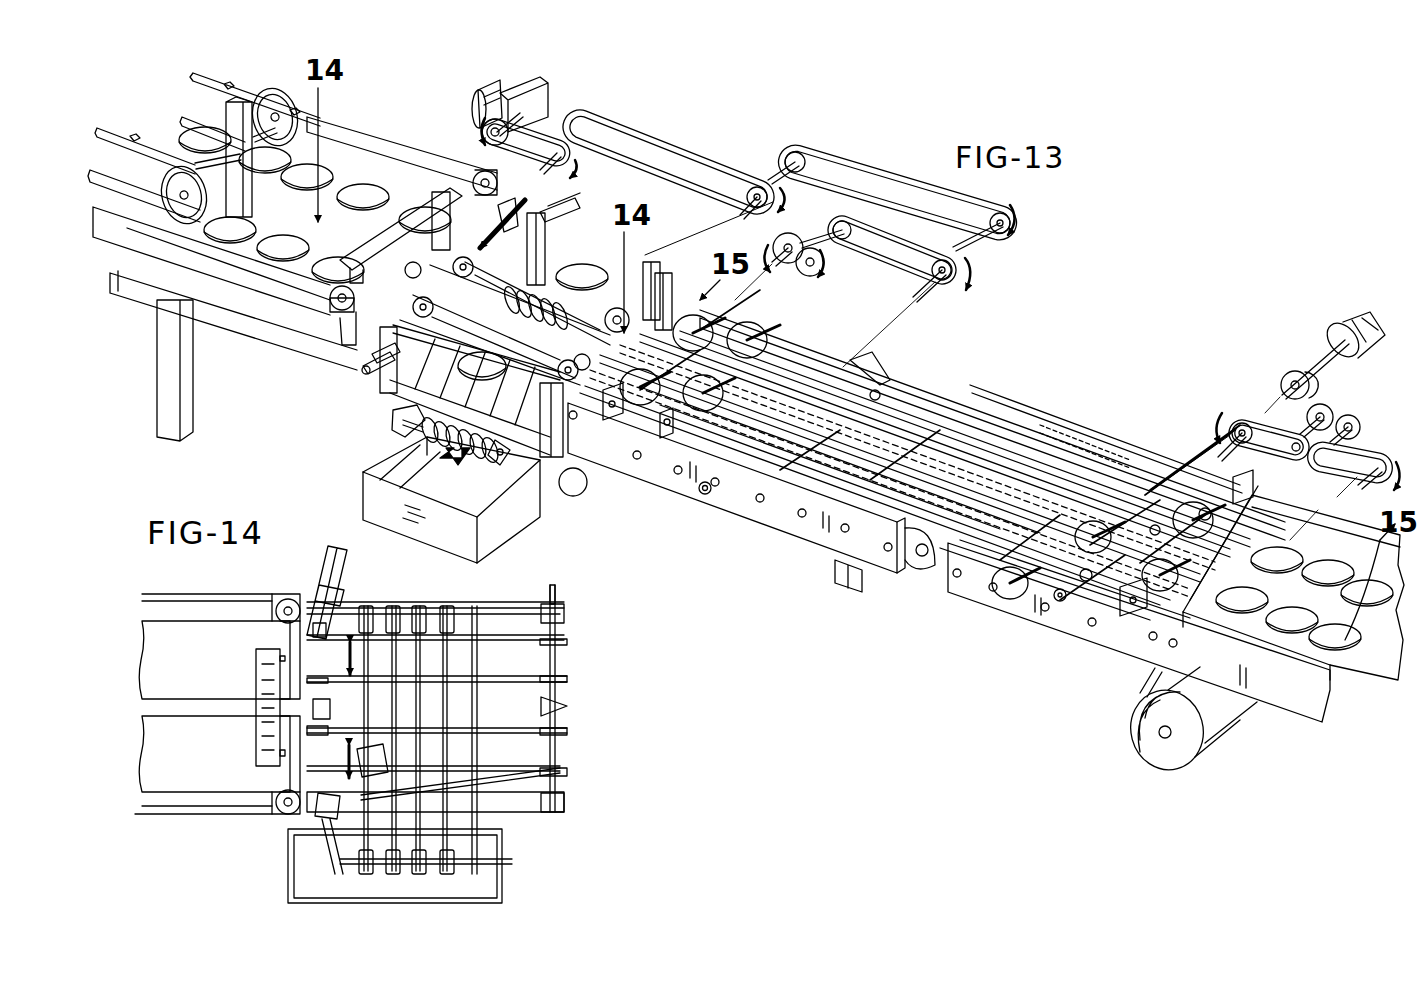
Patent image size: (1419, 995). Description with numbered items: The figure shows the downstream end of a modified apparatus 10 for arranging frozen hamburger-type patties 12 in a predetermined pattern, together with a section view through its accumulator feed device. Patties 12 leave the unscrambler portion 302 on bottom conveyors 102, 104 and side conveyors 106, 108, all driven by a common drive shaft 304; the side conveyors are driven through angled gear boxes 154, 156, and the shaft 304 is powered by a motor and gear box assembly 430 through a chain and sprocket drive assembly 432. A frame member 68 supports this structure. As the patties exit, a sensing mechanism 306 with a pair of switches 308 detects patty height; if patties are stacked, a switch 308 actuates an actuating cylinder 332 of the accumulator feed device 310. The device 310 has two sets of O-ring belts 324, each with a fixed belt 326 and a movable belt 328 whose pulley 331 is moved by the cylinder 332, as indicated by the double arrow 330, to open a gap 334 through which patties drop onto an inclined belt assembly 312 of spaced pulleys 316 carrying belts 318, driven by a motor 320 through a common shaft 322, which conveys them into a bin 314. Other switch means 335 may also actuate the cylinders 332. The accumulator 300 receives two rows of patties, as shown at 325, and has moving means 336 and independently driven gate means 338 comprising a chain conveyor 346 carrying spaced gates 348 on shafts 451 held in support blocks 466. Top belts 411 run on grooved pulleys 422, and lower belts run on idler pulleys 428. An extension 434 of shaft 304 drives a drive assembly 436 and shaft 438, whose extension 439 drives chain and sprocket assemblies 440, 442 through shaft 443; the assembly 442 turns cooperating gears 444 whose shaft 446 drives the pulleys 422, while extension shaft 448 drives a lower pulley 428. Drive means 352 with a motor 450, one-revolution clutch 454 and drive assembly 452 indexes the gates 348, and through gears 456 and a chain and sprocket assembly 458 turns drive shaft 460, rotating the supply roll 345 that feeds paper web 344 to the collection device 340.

In FIG. 13, the apparatus 10 is at (140, 358).
In FIG. 13, the patties 12 is at (412, 180).
In FIG. 13, the frame member 68 is at (130, 312).
In FIG. 13, the bottom conveyor belt 102 is at (330, 150).
In FIG. 14, the bottom conveyor belt 102 is at (140, 650).
In FIG. 13, the bottom conveyor belt 104 is at (148, 170).
In FIG. 14, the bottom conveyor belt 104 is at (140, 735).
In FIG. 13, the side conveyor 106 is at (370, 150).
In FIG. 14, the side conveyor 106 is at (188, 596).
In FIG. 13, the side conveyor 108 is at (150, 243).
In FIG. 14, the side conveyor 108 is at (200, 785).
In FIG. 13, the angled gear box 154 is at (500, 222).
In FIG. 14, the angled gear box 154 is at (278, 597).
In FIG. 13, the angled gear box 156 is at (345, 352).
In FIG. 14, the angled gear box 156 is at (271, 816).
In FIG. 13, the accumulator 300 is at (1048, 362).
In FIG. 13, the unscrambler portion 302 is at (168, 113).
In FIG. 13, the drive shaft 304 is at (550, 130).
In FIG. 13, the sensing mechanism 306 is at (425, 200).
In FIG. 14, the sensing mechanism 306 is at (252, 688).
In FIG. 13, the switch 308 is at (470, 180).
In FIG. 14, the switch 308 is at (257, 657).
In FIG. 13, the accumulator feed device 310 is at (380, 455).
In FIG. 14, the accumulator feed device 310 is at (538, 823).
In FIG. 13, the belt assembly 312 is at (503, 468).
In FIG. 14, the belt assembly 312 is at (432, 747).
In FIG. 13, the bin 314 is at (370, 492).
In FIG. 14, the bin 314 is at (502, 885).
In FIG. 14, the pulleys 316 is at (366, 602).
In FIG. 14, the belts 318 is at (404, 638).
In FIG. 13, the drive motor 320 is at (587, 492).
In FIG. 13, the common shaft 322 is at (395, 425).
In FIG. 14, the common shaft 322 is at (520, 858).
In FIG. 14, the sets of O-ring belts 324 is at (573, 661).
In FIG. 13, the row receiving location 325 is at (650, 280).
In FIG. 14, the fixed belt 326 is at (567, 713).
In FIG. 14, the movable belt 328 is at (516, 632).
In FIG. 14, the double arrow 330 is at (340, 657).
In FIG. 13, the pulley 331 is at (548, 250).
In FIG. 14, the pulley 331 is at (312, 622).
In FIG. 13, the actuating cylinder 332 is at (560, 213).
In FIG. 14, the actuating cylinder 332 is at (330, 553).
In FIG. 14, the opening 334 is at (388, 764).
In FIG. 13, the switch means 335 is at (368, 372).
In FIG. 13, the moving means 336 is at (1160, 628).
In FIG. 13, the gate means 338 is at (945, 362).
In FIG. 13, the collection device 340 is at (1365, 625).
In FIG. 13, the web of paper 344 is at (1340, 560).
In FIG. 13, the supply roll 345 is at (1148, 715).
In FIG. 13, the chain conveyor 346 is at (870, 370).
In FIG. 13, the gates 348 is at (1070, 432).
In FIG. 13, the drive means 352 is at (1302, 335).
In FIG. 13, the endless belts 411 is at (1000, 385).
In FIG. 13, the grooved pulleys 422 is at (720, 320).
In FIG. 13, the idler pulleys 428 is at (920, 545).
In FIG. 13, the motor and gear box assembly 430 is at (497, 88).
In FIG. 13, the chain and sprocket drive assembly 432 is at (515, 95).
In FIG. 13, the shaft extension 434 is at (578, 132).
In FIG. 13, the drive assembly 436 is at (660, 138).
In FIG. 13, the shaft 438 is at (740, 200).
In FIG. 14, the shaft 438 is at (558, 588).
In FIG. 13, the shaft extension 439 is at (778, 165).
In FIG. 13, the chain and sprocket drive assembly 440 is at (905, 165).
In FIG. 13, the chain and sprocket drive assembly 442 is at (898, 275).
In FIG. 13, the shaft 443 is at (992, 242).
In FIG. 13, the cooperating gears 444 is at (795, 232).
In FIG. 13, the shaft 446 is at (760, 262).
In FIG. 13, the extension shaft 448 is at (700, 495).
In FIG. 13, the drive motor 450 is at (1350, 320).
In FIG. 13, the shaft 451 is at (1236, 442).
In FIG. 13, the drive assembly 452 is at (1240, 420).
In FIG. 13, the clutch 454 is at (1290, 370).
In FIG. 13, the pair of gears 456 is at (1345, 408).
In FIG. 13, the chain and sprocket assembly 458 is at (1378, 440).
In FIG. 13, the drive shaft 460 is at (1355, 490).
In FIG. 13, the support blocks 466 is at (1200, 470).